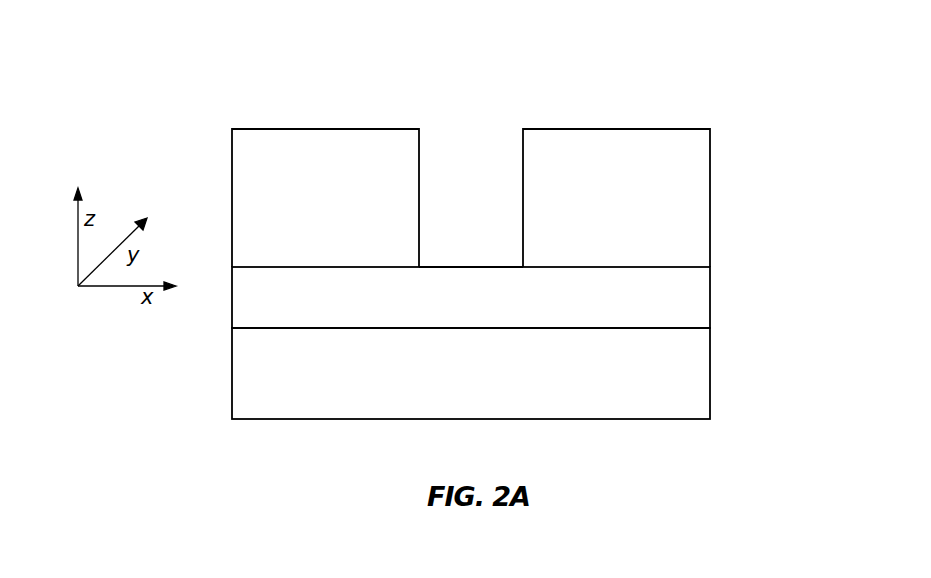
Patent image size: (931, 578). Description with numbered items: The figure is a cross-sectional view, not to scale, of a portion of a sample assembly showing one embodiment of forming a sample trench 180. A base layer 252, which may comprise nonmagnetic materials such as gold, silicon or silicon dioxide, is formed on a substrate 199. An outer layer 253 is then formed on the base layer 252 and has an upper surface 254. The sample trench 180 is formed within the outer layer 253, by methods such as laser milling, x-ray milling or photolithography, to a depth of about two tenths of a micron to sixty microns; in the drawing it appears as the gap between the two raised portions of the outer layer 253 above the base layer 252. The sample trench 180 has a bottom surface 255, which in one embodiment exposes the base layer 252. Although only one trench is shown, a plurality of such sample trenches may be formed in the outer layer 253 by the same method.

The sample trench 180 is at (488, 118).
The substrate 199 is at (700, 375).
The base layer 252 is at (700, 298).
The outer layer 253 is at (326, 142).
The upper surface 254 is at (617, 128).
The bottom surface 255 is at (470, 267).